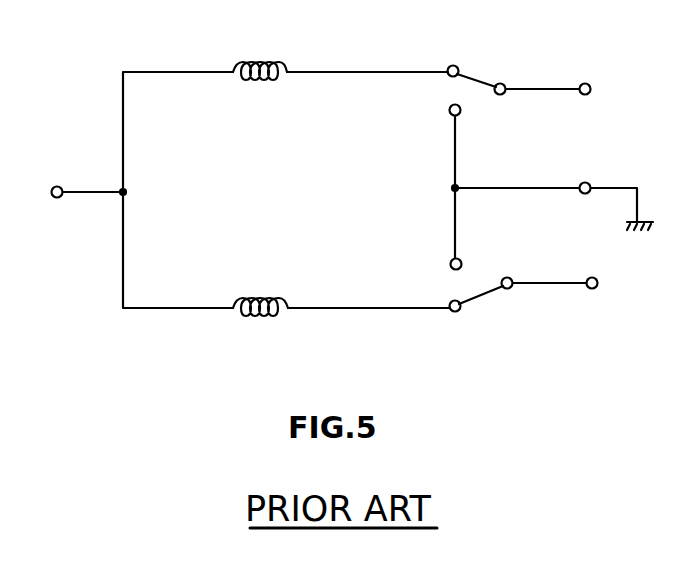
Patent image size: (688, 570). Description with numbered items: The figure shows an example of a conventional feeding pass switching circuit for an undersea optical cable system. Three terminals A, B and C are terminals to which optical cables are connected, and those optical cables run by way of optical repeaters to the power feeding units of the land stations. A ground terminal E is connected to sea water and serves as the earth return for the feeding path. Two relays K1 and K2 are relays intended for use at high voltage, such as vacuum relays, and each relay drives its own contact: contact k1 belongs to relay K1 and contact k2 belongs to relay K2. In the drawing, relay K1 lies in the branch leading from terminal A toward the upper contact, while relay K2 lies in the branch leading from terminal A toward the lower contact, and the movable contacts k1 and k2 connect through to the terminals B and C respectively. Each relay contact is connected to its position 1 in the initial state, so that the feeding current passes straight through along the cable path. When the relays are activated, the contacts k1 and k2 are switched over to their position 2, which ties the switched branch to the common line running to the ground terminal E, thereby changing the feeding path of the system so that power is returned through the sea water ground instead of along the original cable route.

The terminal A is at (76, 209).
The terminal B is at (559, 104).
The terminal C is at (565, 299).
The ground terminal E is at (552, 192).
The relay K1 is at (260, 56).
The relay K2 is at (260, 293).
The contact k1 is at (485, 297).
The contact k2 is at (481, 75).
The initial-state contact position 1 is at (445, 190).
The activated-state contact position 2 is at (445, 190).